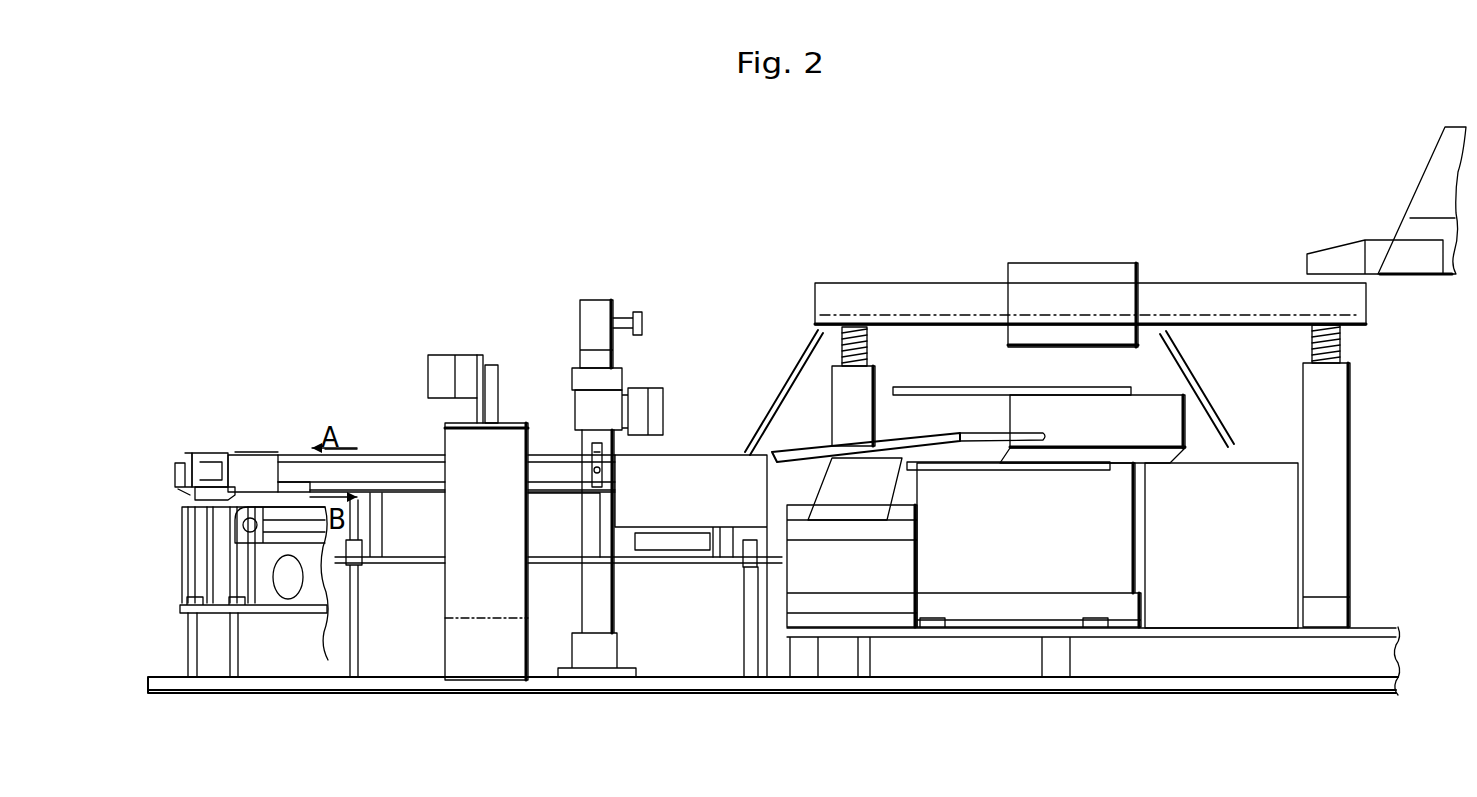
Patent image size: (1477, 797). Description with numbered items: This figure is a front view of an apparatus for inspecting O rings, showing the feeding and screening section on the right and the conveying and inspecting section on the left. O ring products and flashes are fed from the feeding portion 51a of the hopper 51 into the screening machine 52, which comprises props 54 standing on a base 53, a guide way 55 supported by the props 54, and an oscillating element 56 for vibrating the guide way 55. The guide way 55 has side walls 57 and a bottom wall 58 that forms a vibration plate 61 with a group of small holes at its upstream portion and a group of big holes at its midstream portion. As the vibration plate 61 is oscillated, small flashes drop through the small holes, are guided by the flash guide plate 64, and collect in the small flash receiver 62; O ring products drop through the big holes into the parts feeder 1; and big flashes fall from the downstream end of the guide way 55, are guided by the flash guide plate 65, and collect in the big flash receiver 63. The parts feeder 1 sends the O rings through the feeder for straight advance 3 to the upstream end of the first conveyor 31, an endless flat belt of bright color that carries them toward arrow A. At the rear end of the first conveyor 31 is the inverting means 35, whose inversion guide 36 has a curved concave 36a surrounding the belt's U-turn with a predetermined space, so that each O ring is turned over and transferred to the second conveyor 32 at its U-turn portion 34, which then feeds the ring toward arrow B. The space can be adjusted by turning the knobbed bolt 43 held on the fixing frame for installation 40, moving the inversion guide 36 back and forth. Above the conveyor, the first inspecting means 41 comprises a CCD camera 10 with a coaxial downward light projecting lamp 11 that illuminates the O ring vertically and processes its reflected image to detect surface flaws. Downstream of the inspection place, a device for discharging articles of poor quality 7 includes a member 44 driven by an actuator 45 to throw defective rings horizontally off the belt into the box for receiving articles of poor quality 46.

The parts feeder 1 is at (1133, 377).
The feeder for straight advance 3 is at (884, 436).
The device for discharging articles of poor quality 7 is at (476, 343).
The CCD camera 10 is at (590, 373).
The coaxial downward light projecting lamp 11 is at (633, 375).
The first conveyor 31 is at (372, 453).
The second conveyor 32 is at (293, 503).
The U-turn portion 34 is at (220, 533).
The inverting means 35 is at (195, 437).
The inversion guide 36 is at (207, 503).
The curved concave 36a is at (243, 497).
The fixing frame for installation 40 is at (180, 493).
The first inspecting means 41 is at (598, 297).
The knobbed bolt 43 is at (178, 489).
The member for throwing O rings 44 is at (498, 388).
The actuator 45 is at (445, 362).
The box for receiving articles of poor quality 46 is at (468, 559).
The hopper 51 is at (1429, 279).
The feeding portion 51a is at (1331, 253).
The screening machine 52 is at (810, 285).
The base 53 is at (1371, 627).
The props 54 is at (846, 415).
The guide way 55 is at (960, 283).
The oscillating element 56 is at (1127, 280).
The side walls 57 is at (880, 290).
The bottom wall 58 is at (1212, 322).
The vibration plate 61 is at (947, 325).
The small flash receiver 62 is at (1291, 515).
The big flash receiver 63 is at (684, 661).
The flash guide plate 64 is at (1214, 410).
The flash guide plate 65 is at (767, 405).